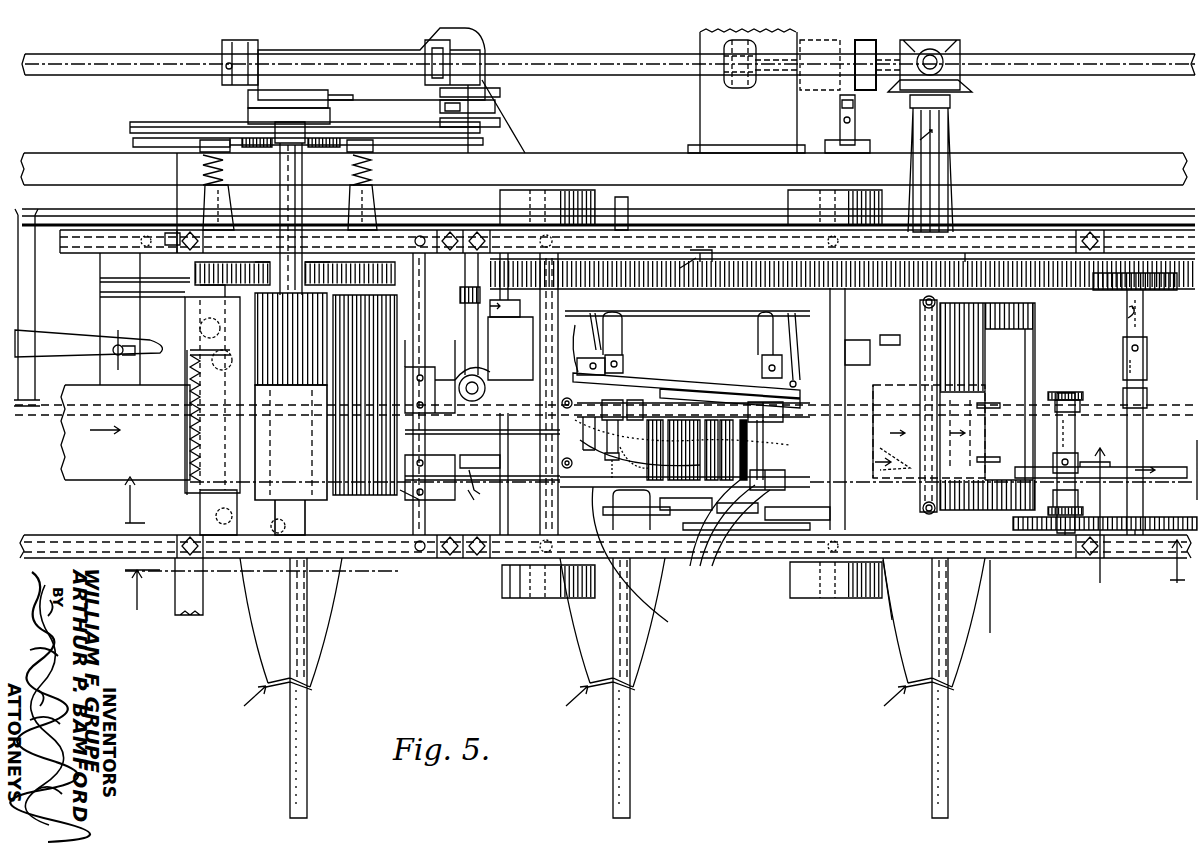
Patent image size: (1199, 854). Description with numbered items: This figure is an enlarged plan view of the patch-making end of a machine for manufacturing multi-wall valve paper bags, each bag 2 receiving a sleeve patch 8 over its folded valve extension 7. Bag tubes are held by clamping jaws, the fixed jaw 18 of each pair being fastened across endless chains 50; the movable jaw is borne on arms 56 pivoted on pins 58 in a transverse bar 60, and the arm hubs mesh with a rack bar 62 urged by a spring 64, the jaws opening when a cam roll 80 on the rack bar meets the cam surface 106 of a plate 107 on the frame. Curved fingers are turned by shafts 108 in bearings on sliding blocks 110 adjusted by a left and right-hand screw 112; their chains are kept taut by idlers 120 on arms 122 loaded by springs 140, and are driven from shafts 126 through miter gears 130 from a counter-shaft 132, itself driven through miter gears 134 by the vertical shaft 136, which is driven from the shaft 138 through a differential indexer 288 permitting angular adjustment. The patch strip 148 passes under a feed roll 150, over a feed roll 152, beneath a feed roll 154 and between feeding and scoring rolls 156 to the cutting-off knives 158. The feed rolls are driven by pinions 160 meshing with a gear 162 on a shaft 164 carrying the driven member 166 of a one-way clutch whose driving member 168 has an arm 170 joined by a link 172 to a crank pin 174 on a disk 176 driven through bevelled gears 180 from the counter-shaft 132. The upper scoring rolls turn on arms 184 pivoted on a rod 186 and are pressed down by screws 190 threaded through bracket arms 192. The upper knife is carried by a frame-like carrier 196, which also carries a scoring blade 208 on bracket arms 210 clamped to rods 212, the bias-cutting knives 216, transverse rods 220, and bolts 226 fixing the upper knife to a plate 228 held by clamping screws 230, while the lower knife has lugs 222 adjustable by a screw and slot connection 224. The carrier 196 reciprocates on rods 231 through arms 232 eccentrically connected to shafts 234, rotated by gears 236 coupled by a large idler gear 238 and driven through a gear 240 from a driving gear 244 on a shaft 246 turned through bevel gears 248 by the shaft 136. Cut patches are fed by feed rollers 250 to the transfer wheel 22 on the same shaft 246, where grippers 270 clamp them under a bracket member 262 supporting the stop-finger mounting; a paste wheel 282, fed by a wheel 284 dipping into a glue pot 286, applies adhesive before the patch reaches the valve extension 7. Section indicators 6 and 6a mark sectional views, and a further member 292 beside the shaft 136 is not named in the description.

The bag 2 is at (571, 712).
The section line 6 is at (655, 587).
The section line 6a is at (932, 612).
The valve extension 7 is at (875, 463).
The sleeve patch 8 is at (642, 399).
The clamping jaw 18 is at (630, 197).
The transfer wheel 22 is at (1046, 340).
The endless chains 50 is at (43, 156).
The arms 56 is at (272, 328).
The pins 58 is at (195, 357).
The transverse bar 60 is at (216, 570).
The rack bar 62 is at (190, 455).
The spring 64 is at (190, 440).
The cam roll 80 is at (185, 326).
The cam surface 106 is at (80, 338).
The plate 107 is at (140, 335).
The shafts 108 is at (205, 168).
The blocks 110 is at (210, 202).
The left and right-hand screw 112 is at (168, 238).
The idler 120 is at (130, 123).
The arm 122 is at (133, 142).
The shaft 126 is at (256, 141).
The miter gears 130 is at (249, 56).
The counter-shaft 132 is at (641, 60).
The miter gears 134 is at (927, 46).
The vertical shaft 136 is at (932, 66).
The shaft 138 is at (552, 58).
The springs 140 is at (372, 167).
The strip 148 is at (65, 475).
The feed roll 150 is at (100, 280).
The feed roll 152 is at (100, 296).
The feed roll 154 is at (393, 343).
The feeding and scoring rolls 156 is at (490, 326).
The cutting-off knives 158 is at (502, 568).
The pinions 160 is at (342, 268).
The gear 162 is at (260, 264).
The shaft 164 is at (282, 166).
The driven clutch member 166 is at (252, 112).
The driving clutch member 168 is at (245, 100).
The clutch arm 170 is at (492, 93).
The link 172 is at (498, 108).
The crank pin 174 is at (494, 124).
The disk 176 is at (470, 80).
The bevelled gears 180 is at (440, 70).
The arm 184 is at (470, 368).
The rod 186 is at (410, 455).
The screw 190 is at (472, 400).
The bracket arm 192 is at (385, 373).
The carrier 196 is at (725, 275).
The scoring blade 208 is at (682, 529).
The bracket arms 210 is at (648, 380).
The rods 212 is at (728, 404).
The knives 216 is at (742, 383).
The transverse rods 220 is at (622, 325).
The lugs 222 is at (577, 360).
The screw and slot connection 224 is at (524, 336).
The screws 226 is at (635, 362).
The plate 228 is at (680, 382).
The clamping screws 230 is at (583, 332).
The rods 231 is at (584, 194).
The arms 232 is at (555, 180).
The shafts 234 is at (841, 319).
The gears 236 is at (893, 244).
The idler gear 238 is at (678, 282).
The gear 240 is at (968, 262).
The driving gear 244 is at (1031, 244).
The shaft 246 is at (950, 168).
The bevel gears 248 is at (945, 62).
The feed rollers 250 is at (726, 558).
The bracket member 262 is at (912, 386).
The grippers 270 is at (1000, 457).
The paste wheel 282 is at (1138, 465).
The wheel 284 is at (1150, 467).
The glue pot 286 is at (1186, 432).
The differential indexer 288 is at (700, 93).
The column 292 is at (930, 140).